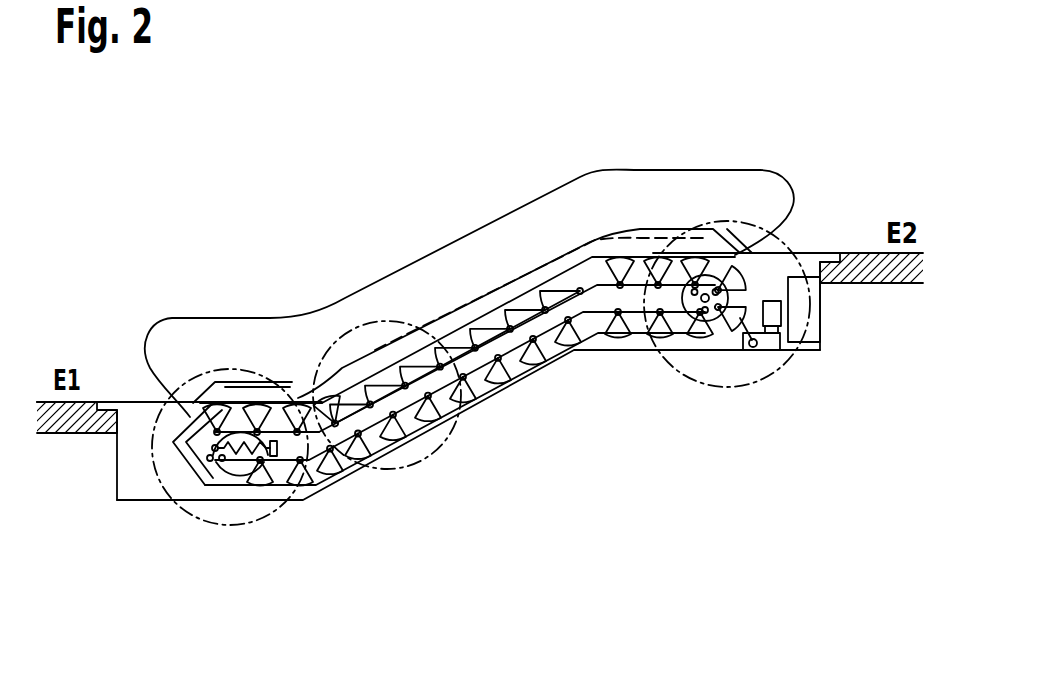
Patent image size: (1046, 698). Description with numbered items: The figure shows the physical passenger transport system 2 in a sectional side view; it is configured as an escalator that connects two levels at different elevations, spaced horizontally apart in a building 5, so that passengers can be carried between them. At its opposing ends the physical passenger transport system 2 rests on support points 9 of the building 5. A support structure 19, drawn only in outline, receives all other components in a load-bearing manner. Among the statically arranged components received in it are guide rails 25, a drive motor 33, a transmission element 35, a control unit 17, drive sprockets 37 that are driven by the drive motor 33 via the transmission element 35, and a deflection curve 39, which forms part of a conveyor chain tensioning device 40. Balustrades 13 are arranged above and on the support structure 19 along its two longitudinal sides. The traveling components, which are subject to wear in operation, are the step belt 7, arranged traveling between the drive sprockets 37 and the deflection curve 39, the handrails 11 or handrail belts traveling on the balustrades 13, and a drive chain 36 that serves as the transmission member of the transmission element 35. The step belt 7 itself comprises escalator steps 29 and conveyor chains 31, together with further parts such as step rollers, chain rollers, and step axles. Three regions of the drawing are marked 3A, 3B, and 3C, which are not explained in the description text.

The physical passenger transport system 2 is at (197, 167).
The building 5 is at (40, 395).
The step belt 7 is at (453, 321).
The support points 9 is at (106, 428).
The handrails 11 is at (673, 171).
The balustrades 13 is at (717, 187).
The control unit 17 is at (810, 343).
The support structure 19 is at (143, 480).
The guide rails 25 is at (612, 345).
The escalator steps 29 is at (301, 400).
The conveyor chains 31 is at (548, 307).
The drive motor 33 is at (773, 301).
The transmission element 35 is at (762, 350).
The drive chain 36 is at (720, 343).
The drive sprockets 37 is at (690, 343).
The deflection curve 39 is at (214, 486).
The conveyor chain tensioning device 40 is at (192, 418).
The detail region A 3A is at (196, 522).
The detail region B 3B is at (664, 387).
The detail region C 3C is at (424, 468).